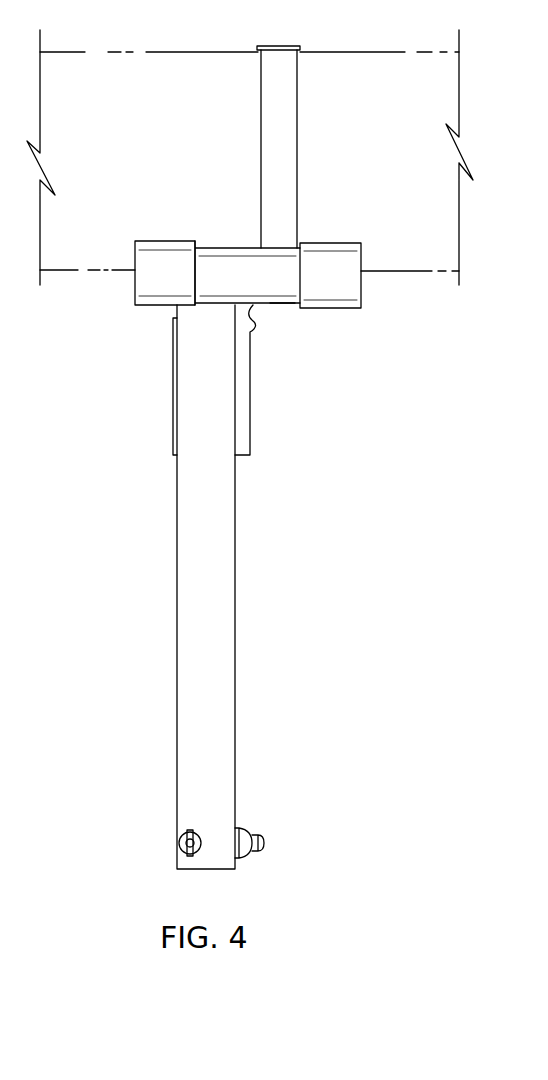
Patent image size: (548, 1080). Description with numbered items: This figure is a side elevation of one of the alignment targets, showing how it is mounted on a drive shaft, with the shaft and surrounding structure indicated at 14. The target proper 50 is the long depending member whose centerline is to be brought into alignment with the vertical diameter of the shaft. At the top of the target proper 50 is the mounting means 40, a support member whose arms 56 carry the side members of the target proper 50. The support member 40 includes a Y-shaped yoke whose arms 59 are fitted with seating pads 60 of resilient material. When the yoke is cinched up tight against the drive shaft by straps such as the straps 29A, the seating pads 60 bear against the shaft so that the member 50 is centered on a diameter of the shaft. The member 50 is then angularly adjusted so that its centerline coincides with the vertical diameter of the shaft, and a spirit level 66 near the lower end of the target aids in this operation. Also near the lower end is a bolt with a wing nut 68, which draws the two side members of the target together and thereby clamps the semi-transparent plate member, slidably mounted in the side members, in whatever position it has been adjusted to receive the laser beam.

The frame 14 is at (382, 128).
The straps 29A is at (272, 111).
The arms 59 is at (212, 253).
The seating pads 60 is at (320, 244).
The mounting means 40 is at (281, 304).
The arms 56 is at (251, 408).
The target proper 50 is at (246, 604).
The spirit level 66 is at (258, 841).
The bolt with wing nut 68 is at (178, 843).